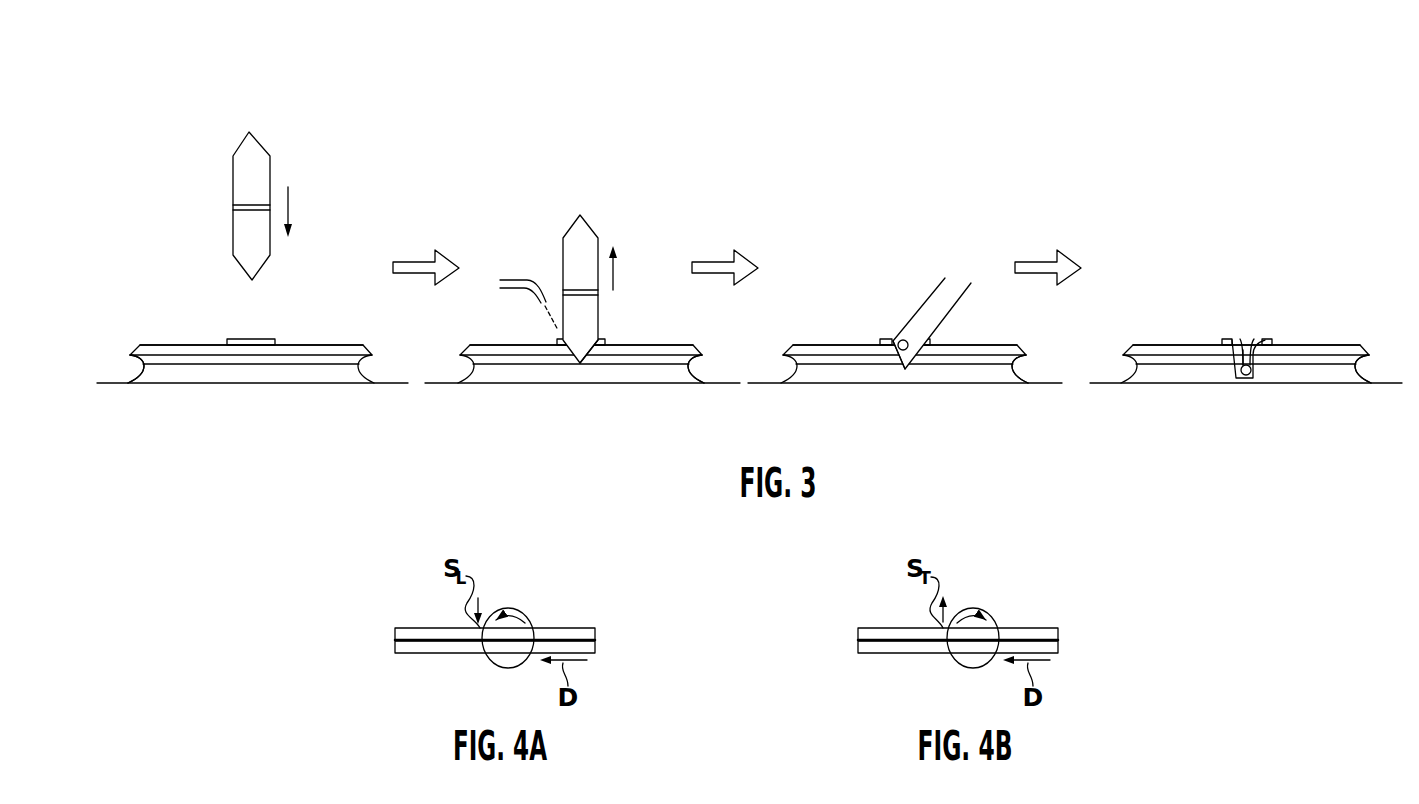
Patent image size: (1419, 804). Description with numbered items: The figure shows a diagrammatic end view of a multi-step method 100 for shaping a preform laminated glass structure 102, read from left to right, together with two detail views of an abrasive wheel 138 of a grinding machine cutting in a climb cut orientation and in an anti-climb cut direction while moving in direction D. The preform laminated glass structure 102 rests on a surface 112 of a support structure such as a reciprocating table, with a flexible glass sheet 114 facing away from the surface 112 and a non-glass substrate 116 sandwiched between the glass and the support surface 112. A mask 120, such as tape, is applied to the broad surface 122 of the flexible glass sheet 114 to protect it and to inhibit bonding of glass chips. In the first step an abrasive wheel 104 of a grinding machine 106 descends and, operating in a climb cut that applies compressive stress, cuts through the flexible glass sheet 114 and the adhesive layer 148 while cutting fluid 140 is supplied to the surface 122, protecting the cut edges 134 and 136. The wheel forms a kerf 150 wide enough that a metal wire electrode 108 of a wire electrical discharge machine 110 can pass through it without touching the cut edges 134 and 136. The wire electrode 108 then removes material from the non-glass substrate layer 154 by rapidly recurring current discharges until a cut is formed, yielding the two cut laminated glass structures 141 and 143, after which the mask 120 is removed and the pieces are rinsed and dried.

In FIG. 3, the multi-step method 100 is at (977, 125).
In FIG. 3, the preform laminated glass structure 102 is at (123, 327).
In FIG. 4A, the preform laminated glass structure 102 is at (575, 608).
In FIG. 4B, the preform laminated glass structure 102 is at (1038, 608).
In FIG. 3, the abrasive wheel 104 is at (260, 168).
In FIG. 3, the grinding machine 106 is at (195, 142).
In FIG. 3, the metal wire electrode 108 is at (1273, 302).
In FIG. 4A, the metal wire electrode 108 is at (413, 637).
In FIG. 4B, the metal wire electrode 108 is at (877, 637).
In FIG. 3, the wire electrical discharge machine 110 is at (898, 324).
In FIG. 4A, the wire electrical discharge machine 110 is at (432, 647).
In FIG. 4B, the wire electrical discharge machine 110 is at (897, 647).
In FIG. 3, the surface of support structure 112 is at (108, 385).
In FIG. 3, the flexible glass sheet 114 is at (298, 348).
In FIG. 3, the non-glass substrate 116 is at (200, 378).
In FIG. 3, the mask 120 is at (233, 339).
In FIG. 3, the broad surface 122 is at (353, 345).
In FIG. 3, the cut edge 134 is at (560, 333).
In FIG. 3, the cut edge 136 is at (589, 337).
In FIG. 4A, the bending roller 138 is at (523, 610).
In FIG. 4B, the bending roller 138 is at (967, 665).
In FIG. 3, the cutting fluid 140 is at (545, 300).
In FIG. 3, the cut laminated glass structure 141 is at (1178, 302).
In FIG. 3, the cut laminated glass structure 143 is at (1317, 317).
In FIG. 3, the adhesive layer 148 is at (283, 362).
In FIG. 3, the kerf 150 is at (910, 370).
In FIG. 3, the non-glass substrate layer 154 is at (167, 378).